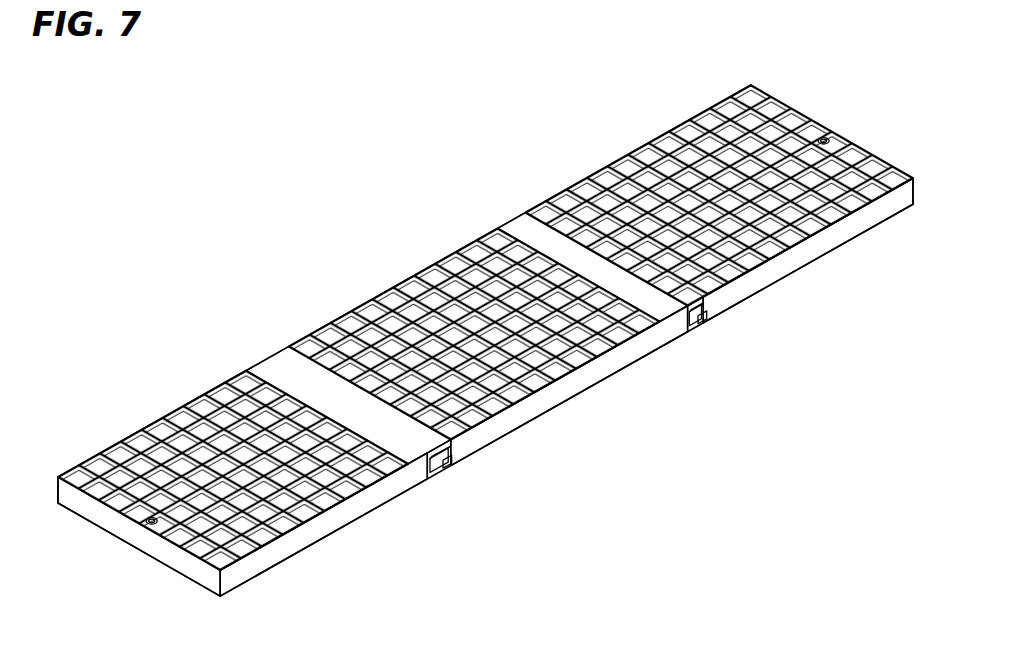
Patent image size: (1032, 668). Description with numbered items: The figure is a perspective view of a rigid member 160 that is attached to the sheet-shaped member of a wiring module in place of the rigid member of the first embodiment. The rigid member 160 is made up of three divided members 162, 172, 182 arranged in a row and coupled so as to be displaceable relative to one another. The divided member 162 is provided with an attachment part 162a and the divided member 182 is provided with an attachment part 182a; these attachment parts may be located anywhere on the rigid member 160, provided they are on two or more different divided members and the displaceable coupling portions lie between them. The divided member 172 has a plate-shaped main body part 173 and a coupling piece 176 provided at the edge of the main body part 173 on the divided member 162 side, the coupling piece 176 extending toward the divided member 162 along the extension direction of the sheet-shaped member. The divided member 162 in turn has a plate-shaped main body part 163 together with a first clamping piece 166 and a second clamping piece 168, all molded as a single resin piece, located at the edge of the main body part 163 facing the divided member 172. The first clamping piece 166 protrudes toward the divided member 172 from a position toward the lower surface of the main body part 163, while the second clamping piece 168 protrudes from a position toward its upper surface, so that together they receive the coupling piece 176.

The rigid member 160 is at (348, 247).
The divided member 162 is at (178, 401).
The attachment part 162a is at (148, 528).
The main body part 163 is at (338, 522).
The first clamping piece 166 is at (432, 476).
The second clamping piece 168 is at (292, 358).
The divided member 172 is at (422, 256).
The main body part 173 is at (580, 387).
The coupling piece 176 is at (450, 470).
The divided member 182 is at (653, 128).
The attachment part 182a is at (829, 138).